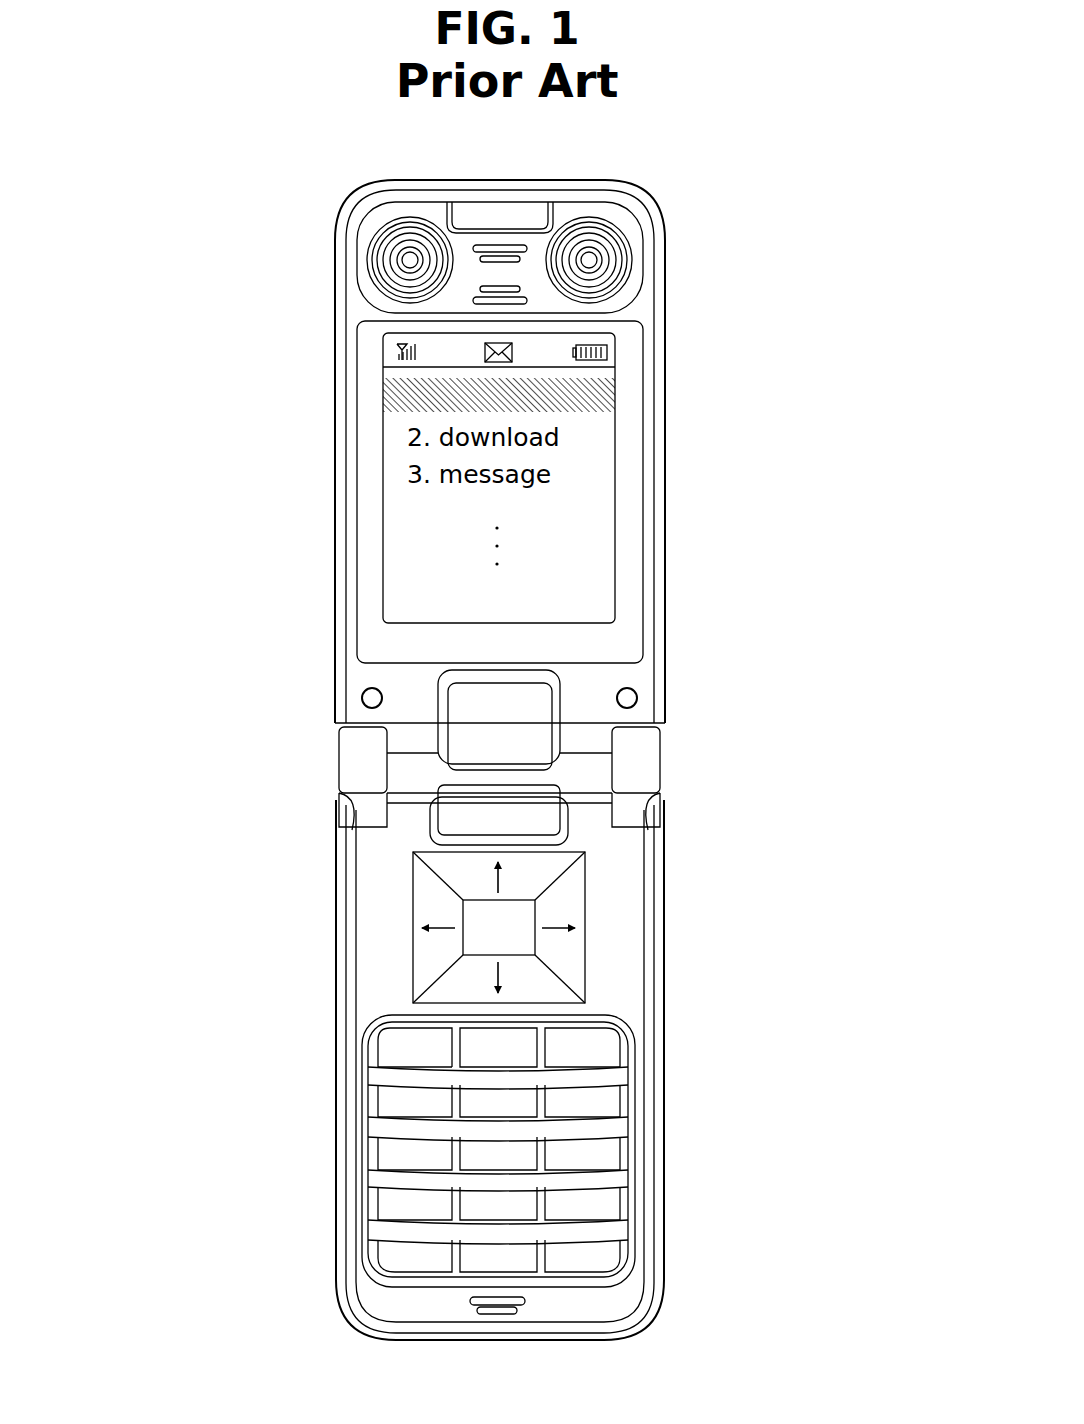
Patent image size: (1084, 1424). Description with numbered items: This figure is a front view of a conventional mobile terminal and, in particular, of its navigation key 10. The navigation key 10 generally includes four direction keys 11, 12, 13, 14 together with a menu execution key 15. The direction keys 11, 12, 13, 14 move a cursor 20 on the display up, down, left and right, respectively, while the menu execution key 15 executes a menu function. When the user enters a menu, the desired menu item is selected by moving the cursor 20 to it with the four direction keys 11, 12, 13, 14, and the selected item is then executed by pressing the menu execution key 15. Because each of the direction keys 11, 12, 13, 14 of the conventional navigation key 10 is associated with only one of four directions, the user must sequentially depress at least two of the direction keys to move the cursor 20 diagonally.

The navigation key 10 is at (501, 931).
The direction key 11 is at (505, 888).
The direction key 12 is at (505, 965).
The direction key 13 is at (444, 923).
The direction key 14 is at (553, 923).
The menu execution key 15 is at (473, 940).
The cursor 20 is at (615, 392).